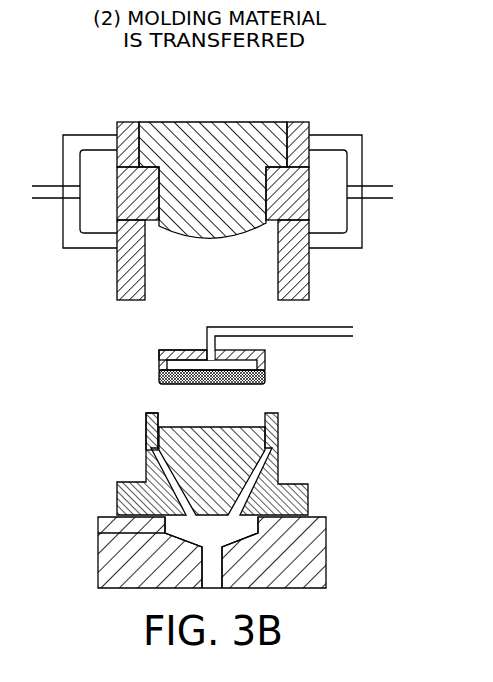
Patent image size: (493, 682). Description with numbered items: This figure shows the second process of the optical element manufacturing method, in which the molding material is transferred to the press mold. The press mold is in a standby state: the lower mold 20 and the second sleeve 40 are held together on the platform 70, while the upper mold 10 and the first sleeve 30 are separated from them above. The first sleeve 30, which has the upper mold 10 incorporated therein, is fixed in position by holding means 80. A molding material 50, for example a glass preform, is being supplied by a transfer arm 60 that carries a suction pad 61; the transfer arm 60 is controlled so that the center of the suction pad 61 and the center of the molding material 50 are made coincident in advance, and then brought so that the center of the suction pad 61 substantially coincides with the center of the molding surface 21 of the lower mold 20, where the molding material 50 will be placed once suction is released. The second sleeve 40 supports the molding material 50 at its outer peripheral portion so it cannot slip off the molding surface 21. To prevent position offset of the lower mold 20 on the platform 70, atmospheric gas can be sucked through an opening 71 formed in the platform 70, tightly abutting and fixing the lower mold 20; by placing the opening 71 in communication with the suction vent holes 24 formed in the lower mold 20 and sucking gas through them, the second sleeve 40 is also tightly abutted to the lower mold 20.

The upper mold 10 is at (208, 130).
The holding means 80 is at (339, 144).
The first sleeve 30 is at (301, 285).
The transfer arm 60 is at (260, 322).
The suction pad 61 is at (187, 349).
The molding material 50 is at (228, 383).
The lower mold 20 is at (131, 482).
The molding surface 21 is at (197, 427).
The suction vent holes 24 is at (278, 465).
The second sleeve 40 is at (278, 415).
The platform 70 is at (326, 560).
The opening 71 is at (208, 527).